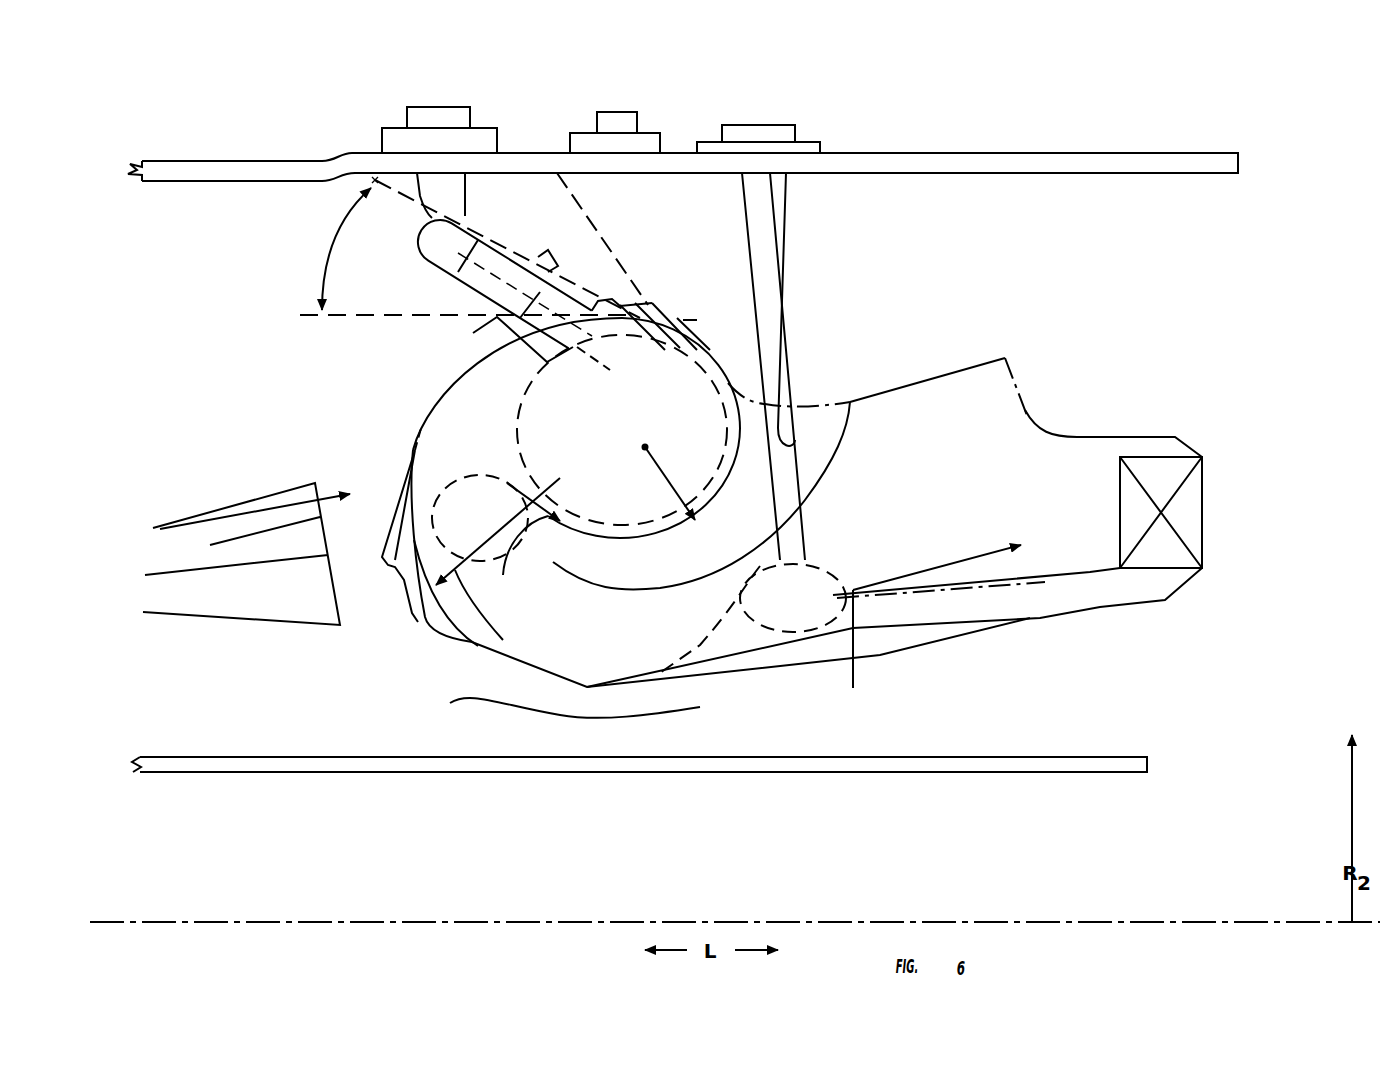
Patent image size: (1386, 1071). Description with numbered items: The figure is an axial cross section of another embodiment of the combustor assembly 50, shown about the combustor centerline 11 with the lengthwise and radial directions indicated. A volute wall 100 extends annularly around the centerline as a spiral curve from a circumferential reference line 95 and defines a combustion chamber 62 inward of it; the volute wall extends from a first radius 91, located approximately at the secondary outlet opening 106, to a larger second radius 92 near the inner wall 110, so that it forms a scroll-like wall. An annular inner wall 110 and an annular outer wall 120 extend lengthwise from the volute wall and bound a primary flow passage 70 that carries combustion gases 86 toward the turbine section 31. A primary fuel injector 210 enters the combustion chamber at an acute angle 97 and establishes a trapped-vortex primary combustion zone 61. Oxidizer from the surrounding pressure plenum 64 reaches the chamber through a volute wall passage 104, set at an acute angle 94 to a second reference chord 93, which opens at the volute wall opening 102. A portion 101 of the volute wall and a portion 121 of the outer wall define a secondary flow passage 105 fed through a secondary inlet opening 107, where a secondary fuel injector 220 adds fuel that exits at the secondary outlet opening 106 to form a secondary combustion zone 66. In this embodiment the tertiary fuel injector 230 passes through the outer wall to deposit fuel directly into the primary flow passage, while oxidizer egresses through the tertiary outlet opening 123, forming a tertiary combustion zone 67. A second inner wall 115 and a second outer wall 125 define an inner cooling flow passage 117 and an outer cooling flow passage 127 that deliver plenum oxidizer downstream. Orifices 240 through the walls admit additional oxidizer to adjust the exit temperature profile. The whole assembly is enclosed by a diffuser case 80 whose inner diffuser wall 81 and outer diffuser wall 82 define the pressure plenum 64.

The combustor centerline 11 is at (845, 920).
The turbine section 31 is at (1256, 383).
The combustor assembly 50 is at (1122, 88).
The primary combustion zone 61 is at (610, 427).
The combustion chamber 62 is at (457, 425).
The pressure plenum 64 is at (358, 234).
The secondary combustion zone 66 is at (468, 530).
The tertiary combustion zone 67 is at (778, 610).
The primary flow passage 70 is at (920, 525).
The diffuser case 80 is at (998, 148).
The inner diffuser wall 81 is at (759, 774).
The outer diffuser wall 82 is at (1022, 165).
The combustion gases 86 is at (856, 652).
The first radius 91 is at (644, 448).
The second radius 92 is at (493, 610).
The second reference chord 93 is at (568, 275).
The acute angle 94 is at (606, 292).
The circumferential reference line 95 is at (646, 447).
The acute angle 97 is at (322, 283).
The volute wall 100 is at (440, 385).
The portion of the volute wall 101 is at (598, 532).
The volute wall opening 102 is at (665, 343).
The volute wall passage 104 is at (652, 303).
The secondary flow passage 105 is at (631, 575).
The secondary outlet opening 106 is at (517, 520).
The secondary inlet opening 107 is at (822, 394).
The inner wall 110 is at (917, 610).
The second inner wall 115 is at (1000, 633).
The inner cooling flow passage 117 is at (1092, 597).
The outer wall 120 is at (878, 399).
The portion of the outer wall 121 is at (583, 580).
The tertiary outlet opening 123 is at (819, 537).
The second outer wall 125 is at (1040, 412).
The outer cooling flow passage 127 is at (1057, 437).
The primary fuel injector 210 is at (472, 286).
The secondary fuel injector 220 is at (795, 425).
The tertiary fuel injector 230 is at (753, 303).
The orifices 240 is at (1025, 397).